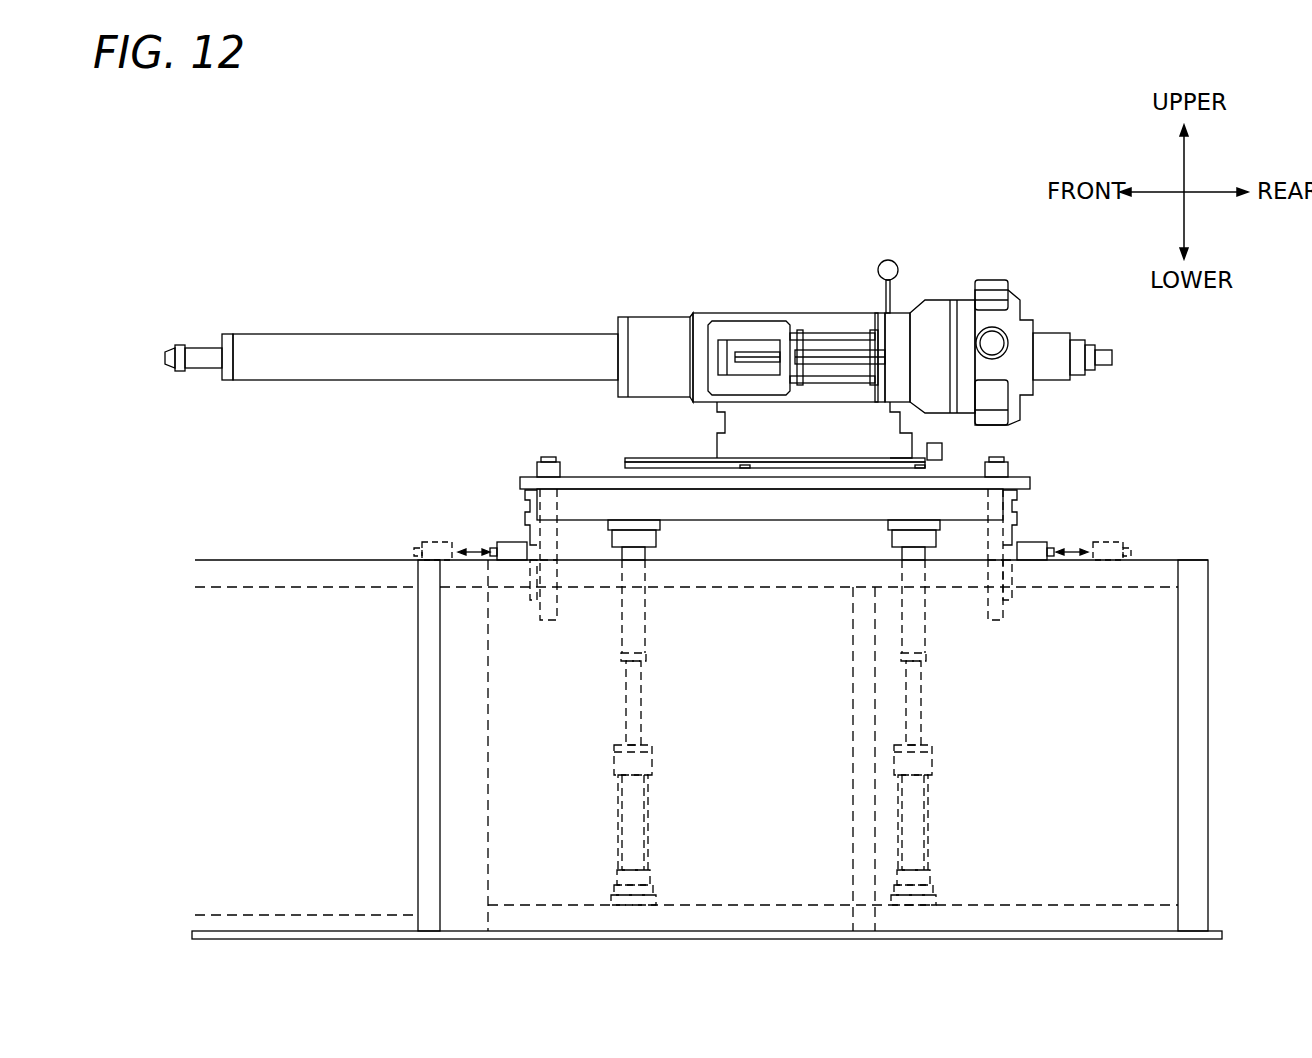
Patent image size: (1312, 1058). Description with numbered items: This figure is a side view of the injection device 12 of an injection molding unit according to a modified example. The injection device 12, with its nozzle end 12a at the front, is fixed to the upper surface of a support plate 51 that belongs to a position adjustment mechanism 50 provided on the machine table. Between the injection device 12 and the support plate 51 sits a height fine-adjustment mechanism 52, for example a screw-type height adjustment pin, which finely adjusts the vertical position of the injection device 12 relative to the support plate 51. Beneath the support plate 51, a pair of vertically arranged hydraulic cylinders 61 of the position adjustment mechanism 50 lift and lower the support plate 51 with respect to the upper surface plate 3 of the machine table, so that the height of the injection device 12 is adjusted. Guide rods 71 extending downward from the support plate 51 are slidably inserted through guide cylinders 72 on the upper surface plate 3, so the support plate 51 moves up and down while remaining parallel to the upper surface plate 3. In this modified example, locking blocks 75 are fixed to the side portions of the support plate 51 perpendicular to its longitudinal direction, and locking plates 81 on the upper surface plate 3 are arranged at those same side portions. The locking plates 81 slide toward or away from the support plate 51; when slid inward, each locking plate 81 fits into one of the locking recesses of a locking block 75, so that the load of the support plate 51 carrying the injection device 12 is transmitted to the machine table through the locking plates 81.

The upper surface plate 3 is at (1132, 557).
The injection device 12 is at (742, 313).
The nozzle / injection cylinder tip 12a is at (205, 346).
The position adjustment mechanism 50 is at (1068, 534).
The support plate 51 is at (588, 477).
The height fine-adjustment mechanism 52 is at (632, 464).
The hydraulic cylinder 61 is at (656, 763).
The guide rod 71 is at (530, 540).
The guide cylinder 72 is at (560, 622).
The locking block 75 is at (528, 500).
The locking plate 81 is at (437, 543).